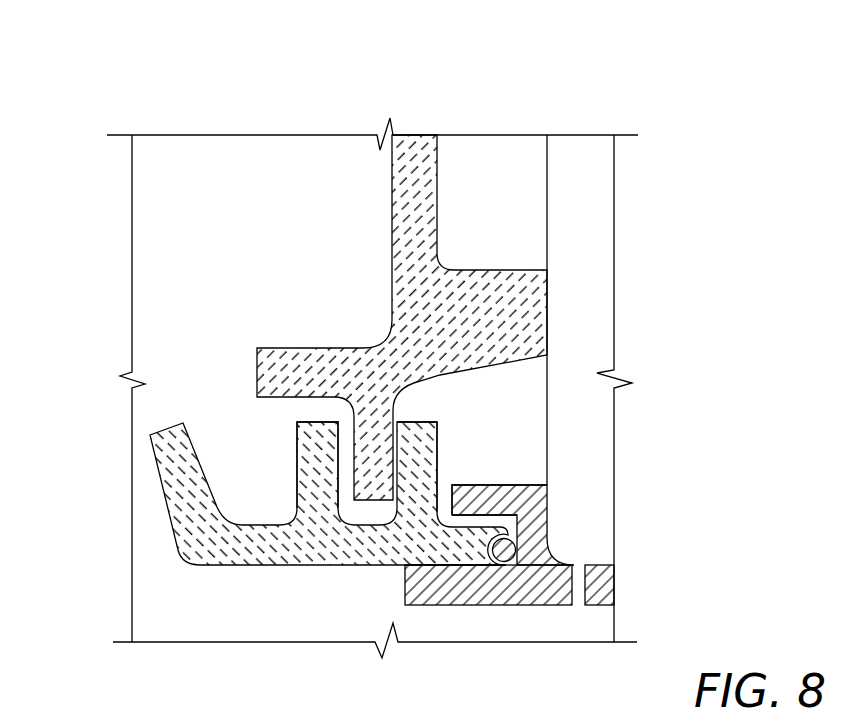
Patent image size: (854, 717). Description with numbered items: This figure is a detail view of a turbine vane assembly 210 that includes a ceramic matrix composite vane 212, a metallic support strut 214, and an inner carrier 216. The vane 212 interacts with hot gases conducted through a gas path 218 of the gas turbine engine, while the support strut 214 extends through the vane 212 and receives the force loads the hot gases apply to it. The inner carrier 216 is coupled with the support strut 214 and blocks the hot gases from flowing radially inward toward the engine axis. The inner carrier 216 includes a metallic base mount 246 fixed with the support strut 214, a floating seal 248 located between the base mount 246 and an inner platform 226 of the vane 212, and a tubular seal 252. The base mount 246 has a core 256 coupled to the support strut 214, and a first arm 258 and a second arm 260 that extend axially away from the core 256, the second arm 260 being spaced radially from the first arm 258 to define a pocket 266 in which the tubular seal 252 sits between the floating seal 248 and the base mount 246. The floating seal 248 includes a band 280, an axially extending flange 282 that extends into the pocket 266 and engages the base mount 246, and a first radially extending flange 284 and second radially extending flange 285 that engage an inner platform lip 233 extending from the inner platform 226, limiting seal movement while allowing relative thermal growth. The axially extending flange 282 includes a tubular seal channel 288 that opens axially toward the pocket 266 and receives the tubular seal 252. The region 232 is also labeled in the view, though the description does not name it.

The turbine vane assembly 210 is at (446, 78).
The ceramic matrix composite vane 212 is at (377, 169).
The metallic support strut 214 is at (597, 118).
The inner carrier 216 is at (256, 612).
The gas path 218 is at (317, 214).
The inner platform 226 is at (349, 284).
The chamber 232 is at (185, 280).
The inner platform lip 233 is at (340, 414).
The base mount 246 is at (578, 622).
The floating seal 248 is at (118, 470).
The tubular seal 252 is at (515, 579).
The core 256 is at (564, 620).
The first arm 258 is at (484, 473).
The second arm 260 is at (385, 610).
The pocket 266 is at (498, 503).
The band 280 is at (313, 580).
The axially extending flange 282 is at (447, 581).
The first radially extending flange 284 is at (425, 407).
The second radially extending flange 285 is at (284, 442).
The tubular seal channel 288 is at (489, 576).